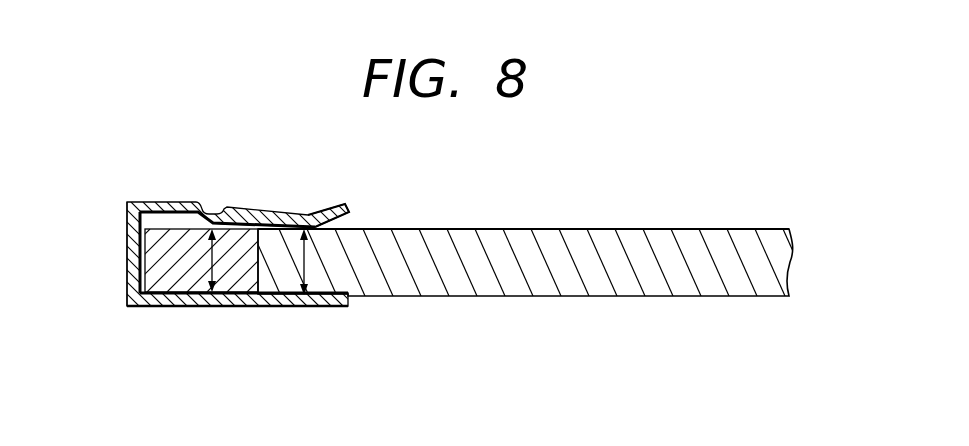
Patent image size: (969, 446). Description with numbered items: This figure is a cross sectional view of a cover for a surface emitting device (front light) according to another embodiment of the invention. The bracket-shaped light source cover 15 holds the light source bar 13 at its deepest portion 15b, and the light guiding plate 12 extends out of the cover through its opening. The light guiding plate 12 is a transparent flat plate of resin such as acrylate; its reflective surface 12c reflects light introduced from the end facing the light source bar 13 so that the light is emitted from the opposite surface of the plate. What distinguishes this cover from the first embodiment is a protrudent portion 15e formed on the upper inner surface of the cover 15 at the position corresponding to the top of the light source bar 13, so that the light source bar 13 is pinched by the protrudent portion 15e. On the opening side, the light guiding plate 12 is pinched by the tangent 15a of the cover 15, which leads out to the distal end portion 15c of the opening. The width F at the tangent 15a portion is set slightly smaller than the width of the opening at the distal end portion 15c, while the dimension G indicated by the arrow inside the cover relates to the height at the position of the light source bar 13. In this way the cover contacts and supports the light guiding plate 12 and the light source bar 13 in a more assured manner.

The light guiding plate 12 is at (603, 296).
The reflective surface 12c is at (427, 229).
The light source bar 13 is at (165, 247).
The light source cover 15 is at (257, 205).
The tangent 15a is at (303, 216).
The deepest portion 15b is at (128, 202).
The distal end portion 15c is at (346, 204).
The protrudent portion 15e is at (208, 229).
The gap dimension G is at (214, 260).
The width F is at (305, 262).